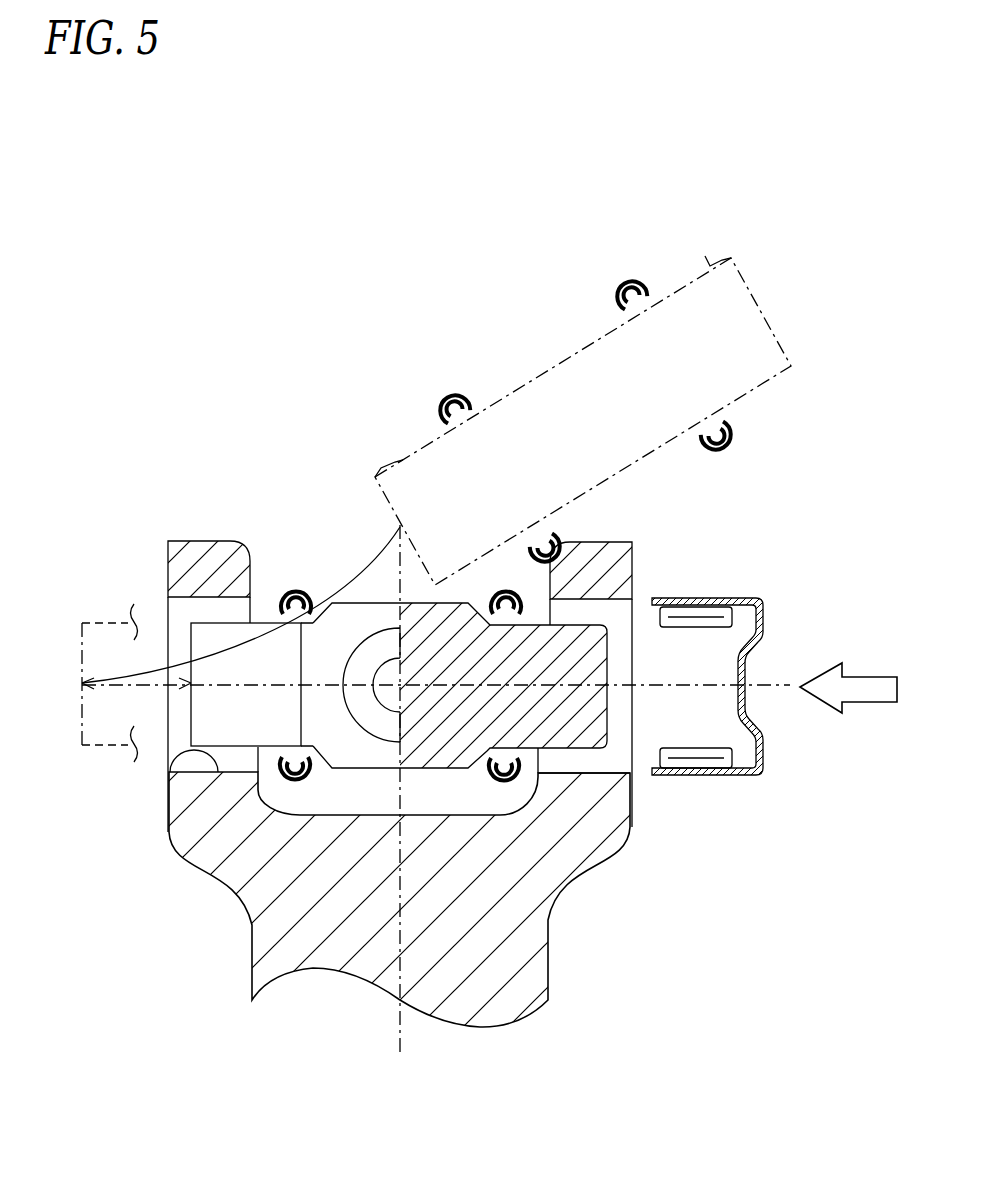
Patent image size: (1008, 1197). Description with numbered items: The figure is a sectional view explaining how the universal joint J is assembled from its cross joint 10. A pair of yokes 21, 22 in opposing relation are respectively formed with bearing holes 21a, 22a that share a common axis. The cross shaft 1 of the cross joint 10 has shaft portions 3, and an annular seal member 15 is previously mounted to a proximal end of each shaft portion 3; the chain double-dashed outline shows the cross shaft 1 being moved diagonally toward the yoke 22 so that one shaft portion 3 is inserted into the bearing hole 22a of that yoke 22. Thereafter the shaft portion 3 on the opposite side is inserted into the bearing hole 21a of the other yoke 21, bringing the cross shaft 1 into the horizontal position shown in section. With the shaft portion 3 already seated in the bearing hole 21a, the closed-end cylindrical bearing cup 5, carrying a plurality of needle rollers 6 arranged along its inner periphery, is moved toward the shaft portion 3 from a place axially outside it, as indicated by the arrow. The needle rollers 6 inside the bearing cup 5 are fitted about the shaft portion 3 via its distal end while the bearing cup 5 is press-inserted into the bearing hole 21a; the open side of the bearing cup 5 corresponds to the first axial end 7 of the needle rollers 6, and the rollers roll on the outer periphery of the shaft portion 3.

The cross shaft 1 is at (360, 770).
The shaft portion 3 is at (412, 612).
The bearing cup 5 is at (762, 633).
The needle roller 6 is at (712, 772).
The first axial end 7 is at (191, 637).
The cross joint 10 is at (763, 710).
The annular seal member 15 is at (293, 588).
The yoke 21 is at (632, 563).
The bearing hole 21a is at (630, 830).
The yoke 22 is at (168, 568).
The bearing hole 22a is at (168, 785).
The universal joint J is at (678, 517).